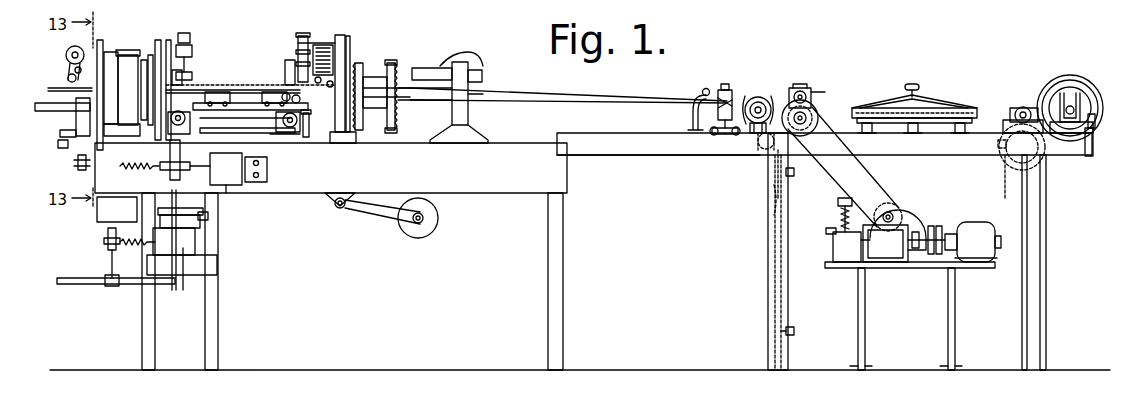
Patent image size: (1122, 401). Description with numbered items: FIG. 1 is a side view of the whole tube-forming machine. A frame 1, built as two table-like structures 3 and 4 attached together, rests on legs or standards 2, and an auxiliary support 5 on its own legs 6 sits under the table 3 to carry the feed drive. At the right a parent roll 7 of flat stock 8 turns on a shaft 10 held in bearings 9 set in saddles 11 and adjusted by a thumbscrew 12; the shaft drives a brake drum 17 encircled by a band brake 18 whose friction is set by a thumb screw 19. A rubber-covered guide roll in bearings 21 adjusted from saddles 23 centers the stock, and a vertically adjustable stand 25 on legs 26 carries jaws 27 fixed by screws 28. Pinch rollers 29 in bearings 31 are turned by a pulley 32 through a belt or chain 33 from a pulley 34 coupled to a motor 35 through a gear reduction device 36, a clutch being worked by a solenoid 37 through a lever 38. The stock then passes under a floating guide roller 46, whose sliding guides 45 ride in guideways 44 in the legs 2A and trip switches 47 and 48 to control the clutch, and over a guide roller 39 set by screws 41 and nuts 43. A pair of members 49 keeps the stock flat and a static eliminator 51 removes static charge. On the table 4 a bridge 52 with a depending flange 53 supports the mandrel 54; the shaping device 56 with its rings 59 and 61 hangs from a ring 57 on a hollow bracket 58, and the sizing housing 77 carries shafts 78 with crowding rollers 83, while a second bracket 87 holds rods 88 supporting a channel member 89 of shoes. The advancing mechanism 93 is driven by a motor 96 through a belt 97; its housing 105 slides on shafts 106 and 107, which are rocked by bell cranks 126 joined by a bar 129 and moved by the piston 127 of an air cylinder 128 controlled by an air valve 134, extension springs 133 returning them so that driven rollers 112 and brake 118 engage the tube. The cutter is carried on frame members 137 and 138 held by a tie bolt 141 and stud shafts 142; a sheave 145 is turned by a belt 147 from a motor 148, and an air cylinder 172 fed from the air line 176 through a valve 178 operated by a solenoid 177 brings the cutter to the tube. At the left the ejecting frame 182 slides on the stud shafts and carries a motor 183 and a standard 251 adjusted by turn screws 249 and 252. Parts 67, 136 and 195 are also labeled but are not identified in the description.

The frame 1 is at (603, 150).
The legs or standards 2 is at (207, 326).
The legs 2A is at (768, 255).
The table 3 is at (677, 150).
The table 4 is at (482, 190).
The auxiliary support 5 is at (919, 268).
The legs 6 is at (950, 322).
The parent roll 7 is at (1088, 88).
The flat stock 8 is at (664, 98).
The bearings 9 is at (1070, 126).
The shaft 10 is at (1070, 106).
The saddles 11 is at (1090, 140).
The thumbscrew 12 is at (1096, 132).
The brake drum 17 is at (1004, 180).
The brake 18 is at (1005, 165).
The thumb screw 19 is at (1002, 134).
The bearings 21 is at (1023, 106).
The saddles 23 is at (1008, 118).
The vertically adjustable stand 25 is at (852, 108).
The legs 26 is at (958, 134).
The adjustable jaws 27 is at (926, 100).
The screws 28 is at (912, 84).
The pinch rollers 29 is at (808, 88).
The bearings 31 is at (798, 96).
The pulley 32 is at (790, 112).
The belt or chain 33 is at (814, 232).
The pulley 34 is at (902, 212).
The motor 35 is at (975, 250).
The gear reduction device 36 is at (898, 208).
The solenoid 37 is at (832, 250).
The lever 38 is at (855, 200).
The guide roller 39 is at (757, 97).
The screws 41 is at (750, 99).
The nuts 43 is at (758, 155).
The guideways 44 is at (775, 277).
The sliding guides 45 is at (770, 198).
The floating guide roller 46 is at (772, 222).
The switch 47 is at (790, 327).
The switch 48 is at (792, 176).
The members 49 is at (694, 107).
The static eliminator 51 is at (717, 86).
The bridge 52 is at (462, 62).
The depending flange 53 is at (482, 79).
The mandrel 54 is at (474, 100).
The shaping device 56 is at (377, 76).
The ring 57 is at (352, 66).
The hollow bracket 58 is at (346, 44).
The ring 59 is at (397, 77).
The ring 61 is at (364, 118).
The gear flange 67 is at (398, 62).
The housing 77 is at (314, 40).
The shafts 78 is at (328, 50).
The crowding rollers 83 is at (298, 99).
The second bracket 87 is at (186, 36).
The vertically adjustable rods 88 is at (180, 74).
The channel member 89 is at (238, 82).
The advancing mechanism 93 is at (240, 122).
The motor 96 is at (424, 232).
The belt 97 is at (366, 216).
The housing 105 is at (266, 177).
The shaft 106 is at (309, 124).
The shaft 107 is at (226, 169).
The rollers 112 is at (214, 92).
The brake 118 is at (247, 121).
The bell crank 126 is at (176, 134).
The piston 127 is at (172, 92).
The air cylinder 128 is at (170, 170).
The bar 129 is at (243, 185).
The extension springs 133 is at (286, 136).
The air valve 134 is at (180, 172).
The spring 136 is at (124, 170).
The frame member 137 is at (103, 48).
The frame member 138 is at (136, 50).
The tie bolt 141 is at (110, 56).
The stud shafts 142 is at (38, 110).
The sheave 145 is at (158, 52).
The belt 147 is at (130, 138).
The motor 148 is at (206, 218).
The air cylinder 172 is at (100, 212).
The line 176 is at (70, 288).
The solenoid 177 is at (182, 253).
The valve 178 is at (104, 244).
The frame 182 is at (50, 88).
The motor 183 is at (64, 56).
The fitting 195 is at (208, 212).
The turn screw 249 is at (78, 168).
The standard 251 is at (76, 120).
The turn screw 252 is at (58, 144).